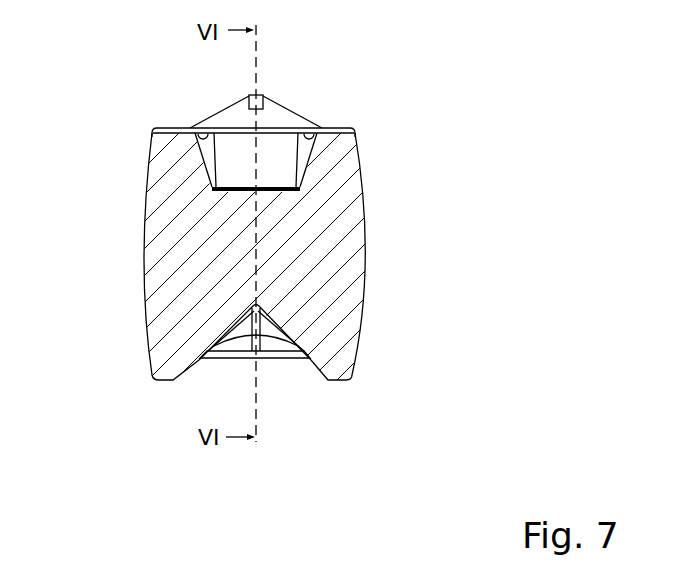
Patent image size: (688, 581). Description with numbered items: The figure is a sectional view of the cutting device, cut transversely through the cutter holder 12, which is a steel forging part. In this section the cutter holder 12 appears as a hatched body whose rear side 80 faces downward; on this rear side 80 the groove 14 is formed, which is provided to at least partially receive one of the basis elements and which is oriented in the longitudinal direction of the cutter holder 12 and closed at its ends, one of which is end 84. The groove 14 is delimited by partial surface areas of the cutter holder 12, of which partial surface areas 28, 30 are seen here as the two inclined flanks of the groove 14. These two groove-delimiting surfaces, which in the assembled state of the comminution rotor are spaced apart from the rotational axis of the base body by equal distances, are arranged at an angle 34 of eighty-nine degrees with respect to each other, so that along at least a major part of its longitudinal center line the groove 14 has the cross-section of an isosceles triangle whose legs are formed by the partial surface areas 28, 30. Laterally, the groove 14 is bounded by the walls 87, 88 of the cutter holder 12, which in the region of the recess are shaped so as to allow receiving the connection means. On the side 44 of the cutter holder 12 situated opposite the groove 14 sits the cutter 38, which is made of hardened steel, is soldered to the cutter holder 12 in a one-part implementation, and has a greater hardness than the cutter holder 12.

The cutter holder 12 is at (342, 195).
The groove 14 is at (301, 384).
The partial surface area 28 is at (318, 370).
The partial surface area 30 is at (173, 382).
The angle 34 is at (246, 330).
The cutter 38 is at (292, 120).
The side of the cutter holder 44 is at (294, 97).
The rear side 80 is at (270, 420).
The end of the groove 84 is at (273, 352).
The wall 87 is at (147, 333).
The wall 88 is at (335, 327).